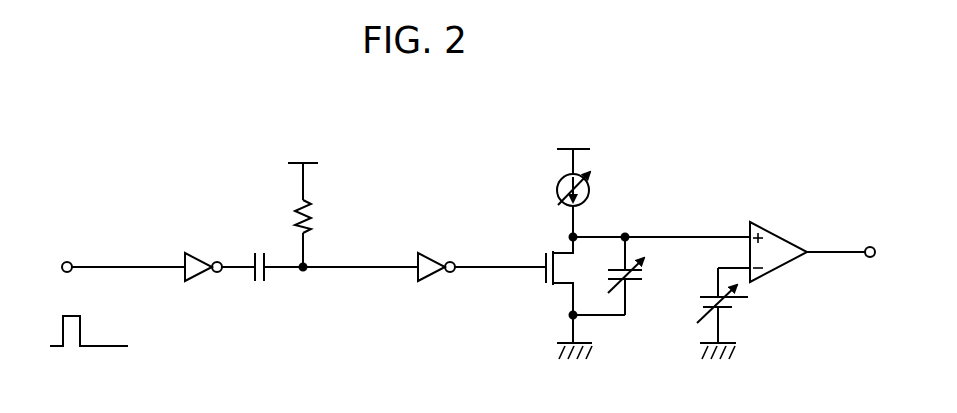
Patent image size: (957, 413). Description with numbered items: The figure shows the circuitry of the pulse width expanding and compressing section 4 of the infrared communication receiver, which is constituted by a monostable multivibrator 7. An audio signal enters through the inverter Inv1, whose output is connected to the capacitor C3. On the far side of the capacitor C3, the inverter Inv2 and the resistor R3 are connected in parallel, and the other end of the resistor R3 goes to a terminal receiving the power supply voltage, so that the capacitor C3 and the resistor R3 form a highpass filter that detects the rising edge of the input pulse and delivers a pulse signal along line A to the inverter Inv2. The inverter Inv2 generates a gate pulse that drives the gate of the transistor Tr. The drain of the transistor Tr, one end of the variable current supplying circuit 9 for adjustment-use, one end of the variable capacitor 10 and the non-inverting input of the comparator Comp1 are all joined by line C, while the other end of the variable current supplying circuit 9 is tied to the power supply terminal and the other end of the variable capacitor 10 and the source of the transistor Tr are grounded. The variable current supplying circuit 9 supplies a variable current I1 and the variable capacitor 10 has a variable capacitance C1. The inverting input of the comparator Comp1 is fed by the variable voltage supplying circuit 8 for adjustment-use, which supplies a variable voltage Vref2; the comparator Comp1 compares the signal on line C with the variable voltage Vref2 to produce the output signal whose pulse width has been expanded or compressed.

The pulse width expanding and compressing section 4 is at (820, 50).
The monostable multivibrator 7 is at (708, 114).
The variable voltage supplying circuit for adjustment-use 8 is at (690, 318).
The variable current supplying circuit for adjustment-use 9 is at (552, 183).
The variable capacitor 10 is at (633, 299).
The inverter Inv1 is at (200, 284).
The inverter Inv2 is at (433, 284).
The capacitor C3 is at (258, 284).
The resistor R3 is at (311, 211).
The transistor Tr is at (551, 251).
The variable current I1 is at (592, 186).
The variable capacitance C1 is at (647, 282).
The comparator Comp1 is at (768, 224).
The variable voltage Vref2 is at (748, 300).